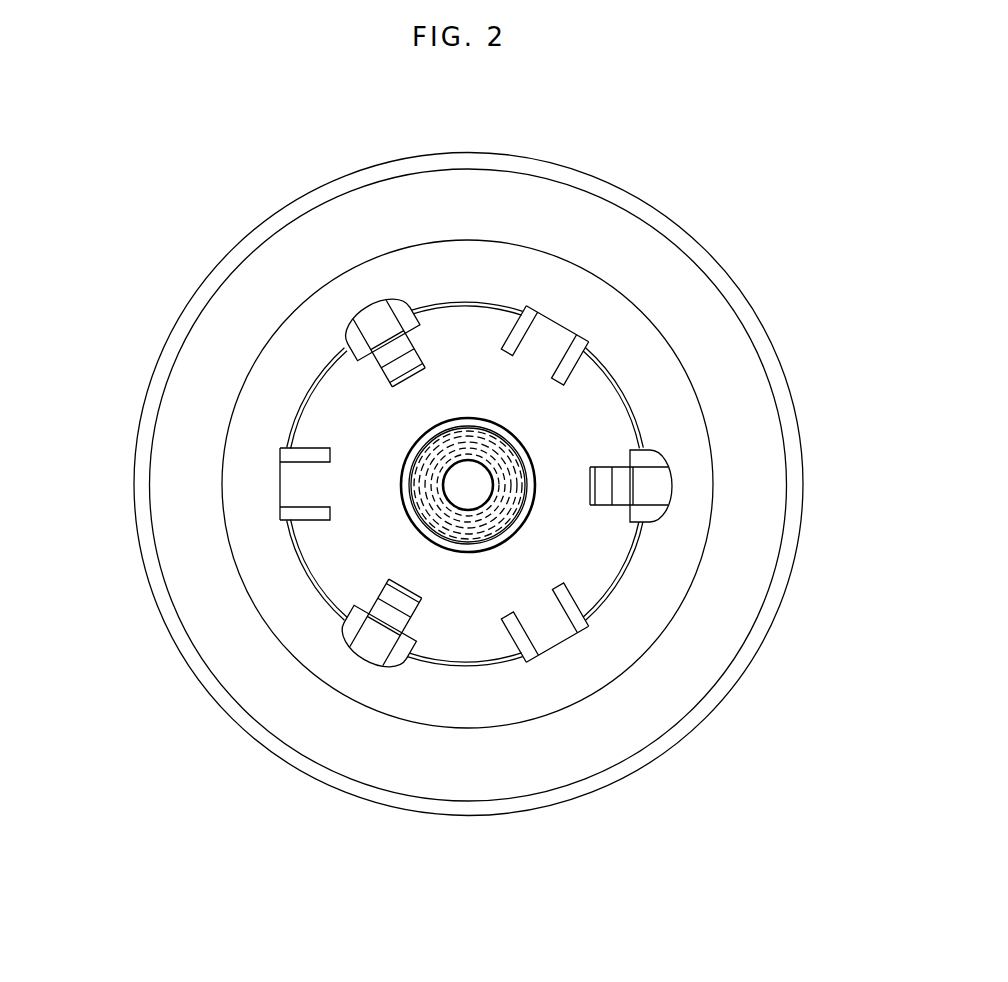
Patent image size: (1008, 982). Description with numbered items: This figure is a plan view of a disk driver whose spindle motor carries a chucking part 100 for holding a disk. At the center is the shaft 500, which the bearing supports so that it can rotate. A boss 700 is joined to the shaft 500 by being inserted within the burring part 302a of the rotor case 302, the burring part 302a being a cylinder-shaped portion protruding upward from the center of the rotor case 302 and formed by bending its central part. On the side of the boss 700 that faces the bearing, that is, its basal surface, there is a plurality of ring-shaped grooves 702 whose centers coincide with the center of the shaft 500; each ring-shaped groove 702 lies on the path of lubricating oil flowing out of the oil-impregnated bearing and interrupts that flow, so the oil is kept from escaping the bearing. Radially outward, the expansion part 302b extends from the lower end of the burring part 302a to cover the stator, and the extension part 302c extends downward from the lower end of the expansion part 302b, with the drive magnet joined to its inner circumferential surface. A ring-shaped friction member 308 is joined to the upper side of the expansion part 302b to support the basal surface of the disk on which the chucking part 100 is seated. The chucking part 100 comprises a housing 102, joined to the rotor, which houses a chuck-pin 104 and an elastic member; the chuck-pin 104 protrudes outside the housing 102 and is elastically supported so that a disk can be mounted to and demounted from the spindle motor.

The chucking part 100 is at (455, 647).
The housing 102 is at (302, 483).
The chuck-pin 104 is at (378, 328).
The rotor case 302 is at (263, 920).
The burring part 302a is at (410, 637).
The expansion part 302b is at (283, 626).
The extension part 302c is at (358, 790).
The friction member 308 is at (623, 718).
The shaft 500 is at (468, 485).
The boss 700 is at (513, 465).
The ring-shaped groove 702 is at (437, 510).